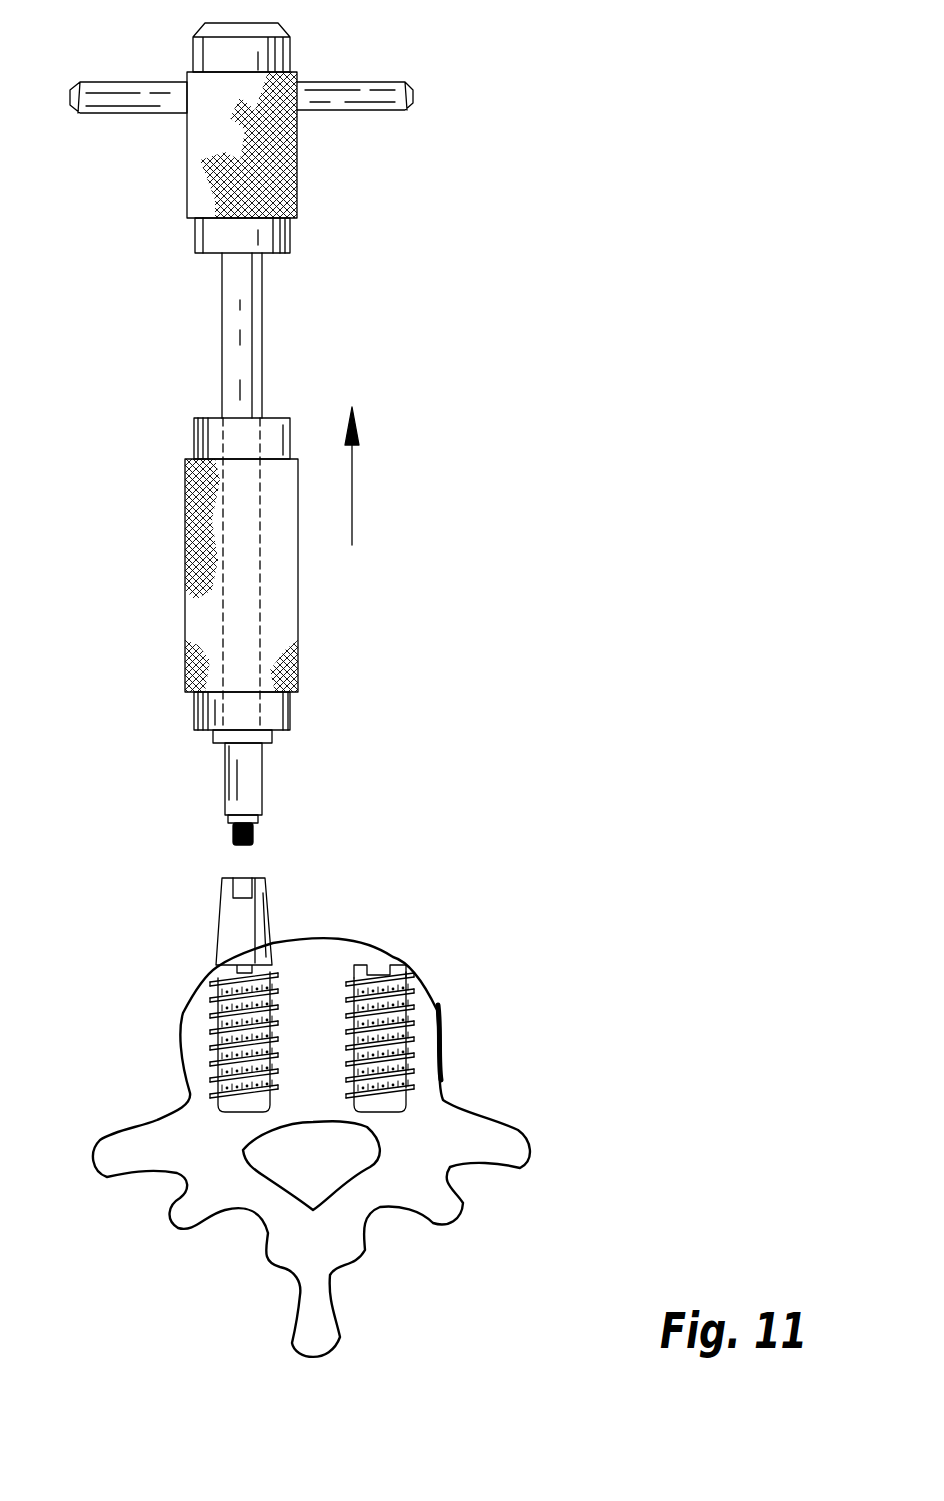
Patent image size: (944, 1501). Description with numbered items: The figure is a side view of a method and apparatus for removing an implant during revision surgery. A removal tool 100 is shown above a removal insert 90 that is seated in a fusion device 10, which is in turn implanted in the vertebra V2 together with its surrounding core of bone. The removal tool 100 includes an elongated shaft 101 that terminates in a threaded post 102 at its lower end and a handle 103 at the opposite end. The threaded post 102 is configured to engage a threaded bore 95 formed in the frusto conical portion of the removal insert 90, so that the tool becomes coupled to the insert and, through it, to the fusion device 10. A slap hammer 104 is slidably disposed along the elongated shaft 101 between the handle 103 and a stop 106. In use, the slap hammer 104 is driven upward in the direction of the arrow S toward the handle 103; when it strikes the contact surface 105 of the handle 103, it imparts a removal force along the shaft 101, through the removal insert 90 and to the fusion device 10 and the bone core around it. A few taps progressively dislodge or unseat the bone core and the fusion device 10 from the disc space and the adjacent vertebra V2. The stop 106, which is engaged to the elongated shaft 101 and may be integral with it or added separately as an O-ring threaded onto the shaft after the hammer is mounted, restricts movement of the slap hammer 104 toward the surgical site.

The removal tool 100 is at (303, 376).
The handle 103 is at (297, 167).
The contact surface 105 is at (273, 253).
The slap hammer 104 is at (185, 607).
The stop 106 is at (272, 737).
The elongated shaft 101 is at (225, 783).
The threaded post 102 is at (258, 838).
The arrow S is at (352, 488).
The removal insert 90 is at (233, 908).
The threaded bore 95 is at (244, 878).
The fusion device 10 is at (210, 1016).
The vertebra V2 is at (427, 1027).